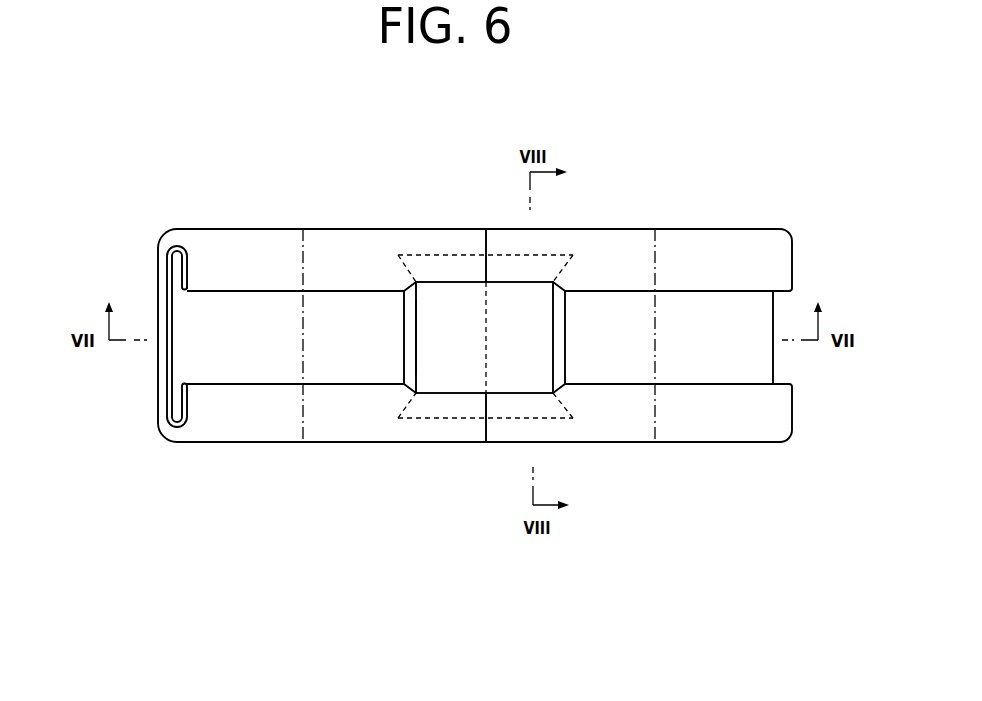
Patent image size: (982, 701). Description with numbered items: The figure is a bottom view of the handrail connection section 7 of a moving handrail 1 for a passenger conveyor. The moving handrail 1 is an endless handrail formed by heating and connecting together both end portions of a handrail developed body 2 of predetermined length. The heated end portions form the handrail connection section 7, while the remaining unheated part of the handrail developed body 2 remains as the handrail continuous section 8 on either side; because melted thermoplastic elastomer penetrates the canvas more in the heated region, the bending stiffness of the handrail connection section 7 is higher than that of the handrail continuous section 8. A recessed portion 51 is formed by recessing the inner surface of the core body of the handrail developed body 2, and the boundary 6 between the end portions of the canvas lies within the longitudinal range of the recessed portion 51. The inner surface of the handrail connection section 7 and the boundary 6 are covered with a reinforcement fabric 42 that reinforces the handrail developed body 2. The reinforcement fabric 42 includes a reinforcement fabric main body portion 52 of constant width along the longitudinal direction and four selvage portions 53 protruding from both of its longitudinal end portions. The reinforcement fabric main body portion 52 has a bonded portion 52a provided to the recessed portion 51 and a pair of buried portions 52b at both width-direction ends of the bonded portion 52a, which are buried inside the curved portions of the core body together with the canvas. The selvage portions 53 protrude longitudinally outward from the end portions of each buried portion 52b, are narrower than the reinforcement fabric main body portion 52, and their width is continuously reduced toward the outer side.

The moving handrail 1 is at (150, 226).
The handrail developed body 2 is at (242, 229).
The boundary 6 is at (488, 362).
The handrail connection section 7 is at (610, 443).
The handrail continuous section 8 is at (250, 443).
The reinforcement fabric 42 is at (414, 315).
The recessed portion 51 is at (560, 333).
The reinforcement fabric main body portion 52 is at (460, 256).
The bonded portion 52a is at (440, 343).
The buried portions 52b is at (499, 262).
The selvage portions 53 is at (413, 256).